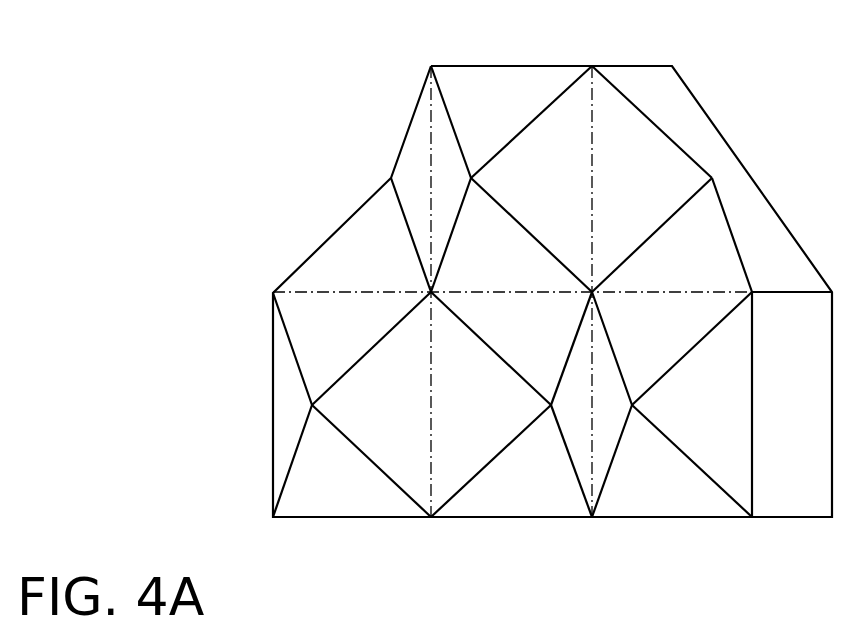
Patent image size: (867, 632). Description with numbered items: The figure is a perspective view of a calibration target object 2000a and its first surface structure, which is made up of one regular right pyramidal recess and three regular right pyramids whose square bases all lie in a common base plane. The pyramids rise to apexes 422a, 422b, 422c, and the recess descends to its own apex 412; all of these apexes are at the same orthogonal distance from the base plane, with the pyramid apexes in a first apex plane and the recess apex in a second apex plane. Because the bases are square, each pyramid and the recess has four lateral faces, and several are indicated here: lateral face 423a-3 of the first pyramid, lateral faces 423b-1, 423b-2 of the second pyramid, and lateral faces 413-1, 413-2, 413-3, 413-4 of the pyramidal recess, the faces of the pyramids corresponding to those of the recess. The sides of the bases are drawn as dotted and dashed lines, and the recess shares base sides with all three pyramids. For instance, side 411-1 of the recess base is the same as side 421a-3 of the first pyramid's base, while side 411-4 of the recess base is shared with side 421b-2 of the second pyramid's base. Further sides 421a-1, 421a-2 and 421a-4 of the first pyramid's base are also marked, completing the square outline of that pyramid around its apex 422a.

The calibration target object 2000a is at (150, 67).
The side of the base of the pyramid 421a-1 is at (497, 66).
The side of the base of the pyramid 421a-2 is at (590, 195).
The side of the base of the pyramid 421a-3 is at (460, 292).
The side of the base of the pyramid 421a-4 is at (430, 138).
The apex of the pyramid 422a is at (473, 178).
The apex of the pyramid 422b is at (310, 412).
The apex of the pyramid 422c is at (633, 405).
The lateral face of the pyramid 423a-3 is at (533, 261).
The lateral face of the pyramid 423b-1 is at (370, 337).
The lateral face of the pyramid 423b-2 is at (425, 426).
The side of the base of the pyramid 421b-2 is at (427, 343).
The side of the base of the pyramidal recess 411-1 is at (552, 294).
The side of the base of the pyramidal recess 411-4 is at (433, 468).
The apex of the pyramidal recess 412 is at (558, 412).
The lateral face of the pyramidal recess 413-1 is at (565, 349).
The lateral face of the pyramidal recess 413-2 is at (585, 437).
The lateral face of the pyramidal recess 413-3 is at (550, 507).
The lateral face of the pyramidal recess 413-4 is at (513, 401).